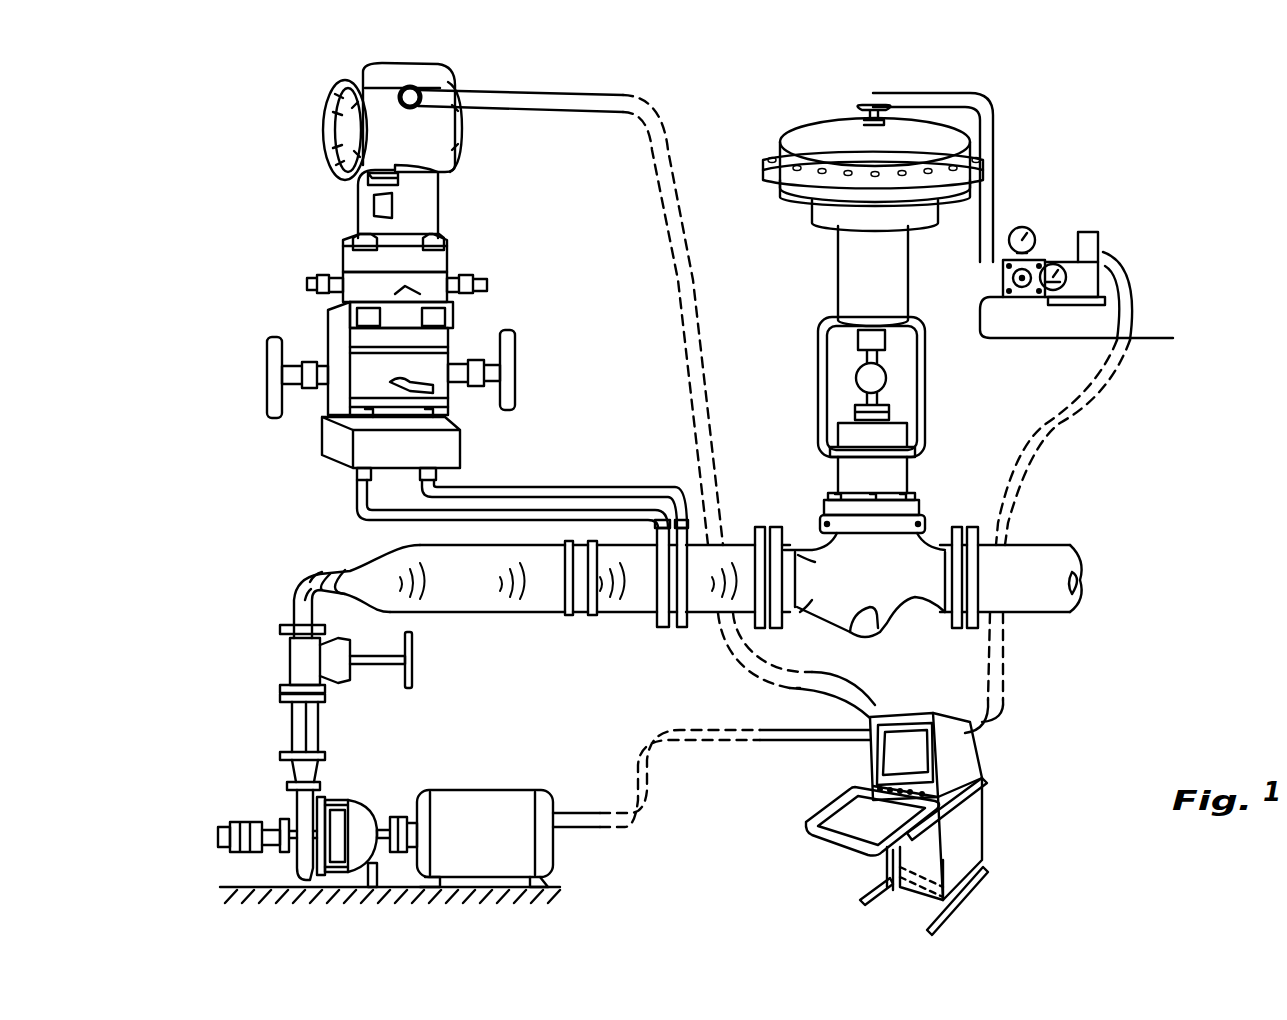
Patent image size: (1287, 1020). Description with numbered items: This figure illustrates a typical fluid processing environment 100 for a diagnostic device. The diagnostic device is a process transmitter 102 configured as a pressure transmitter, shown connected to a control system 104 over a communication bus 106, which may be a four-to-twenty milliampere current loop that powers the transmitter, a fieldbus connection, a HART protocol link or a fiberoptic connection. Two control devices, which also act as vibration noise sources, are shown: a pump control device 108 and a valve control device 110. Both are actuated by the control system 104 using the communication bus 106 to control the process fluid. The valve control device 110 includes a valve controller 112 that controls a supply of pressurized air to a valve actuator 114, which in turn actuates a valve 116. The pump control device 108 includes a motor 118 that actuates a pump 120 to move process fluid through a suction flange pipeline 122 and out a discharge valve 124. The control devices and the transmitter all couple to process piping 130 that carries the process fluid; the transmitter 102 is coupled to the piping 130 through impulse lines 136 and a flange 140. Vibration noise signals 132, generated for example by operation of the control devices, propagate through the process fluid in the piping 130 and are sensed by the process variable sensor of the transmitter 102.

The fluid processing environment 100 is at (232, 268).
The process transmitter 102 is at (338, 170).
The control system 104 is at (985, 758).
The communication bus 106 is at (665, 195).
The pump control device 108 is at (233, 796).
The valve control device 110 is at (1125, 158).
The valve controller 112 is at (1050, 228).
The valve actuator 114 is at (846, 279).
The valve 116 is at (897, 562).
The motor 118 is at (455, 795).
The pump 120 is at (352, 815).
The suction flange pipeline 122 is at (268, 845).
The discharge valve 124 is at (292, 700).
The process piping 130 is at (368, 570).
The vibration noise signals 132 is at (697, 647).
The impulse lines 136 is at (556, 493).
The flange 140 is at (518, 345).